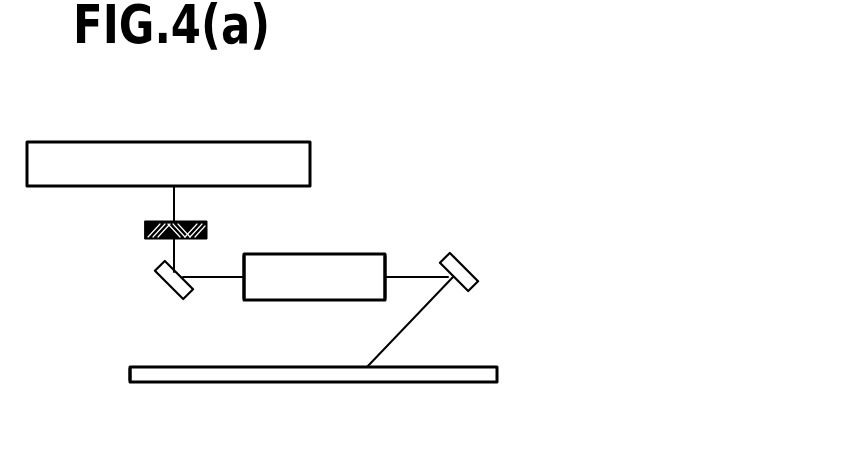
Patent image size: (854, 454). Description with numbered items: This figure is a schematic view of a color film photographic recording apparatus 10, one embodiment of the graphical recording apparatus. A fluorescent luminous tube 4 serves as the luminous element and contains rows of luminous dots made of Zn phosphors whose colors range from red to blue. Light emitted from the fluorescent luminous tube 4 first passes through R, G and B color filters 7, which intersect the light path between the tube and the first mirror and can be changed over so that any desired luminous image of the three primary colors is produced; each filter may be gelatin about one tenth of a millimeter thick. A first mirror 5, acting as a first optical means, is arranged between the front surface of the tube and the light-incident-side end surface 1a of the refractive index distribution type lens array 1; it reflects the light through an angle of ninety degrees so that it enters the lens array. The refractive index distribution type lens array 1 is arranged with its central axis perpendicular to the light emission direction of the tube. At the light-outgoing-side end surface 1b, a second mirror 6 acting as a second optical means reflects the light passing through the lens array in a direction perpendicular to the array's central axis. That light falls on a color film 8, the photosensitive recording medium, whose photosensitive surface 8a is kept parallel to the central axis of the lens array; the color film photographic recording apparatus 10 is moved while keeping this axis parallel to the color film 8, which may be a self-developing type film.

The refractive index distribution type lens array 1 is at (345, 254).
The light-incident-side end surface 1a is at (246, 268).
The light-outgoing-side end surface 1b is at (387, 266).
The fluorescent luminous tube 4 is at (302, 154).
The first mirror 5 is at (158, 272).
The second mirror 6 is at (455, 259).
The R, G and B color filters 7 is at (145, 225).
The color film 8 is at (473, 371).
The photosensitive surface 8a is at (137, 367).
The color film photographic recording apparatus 10 is at (384, 214).